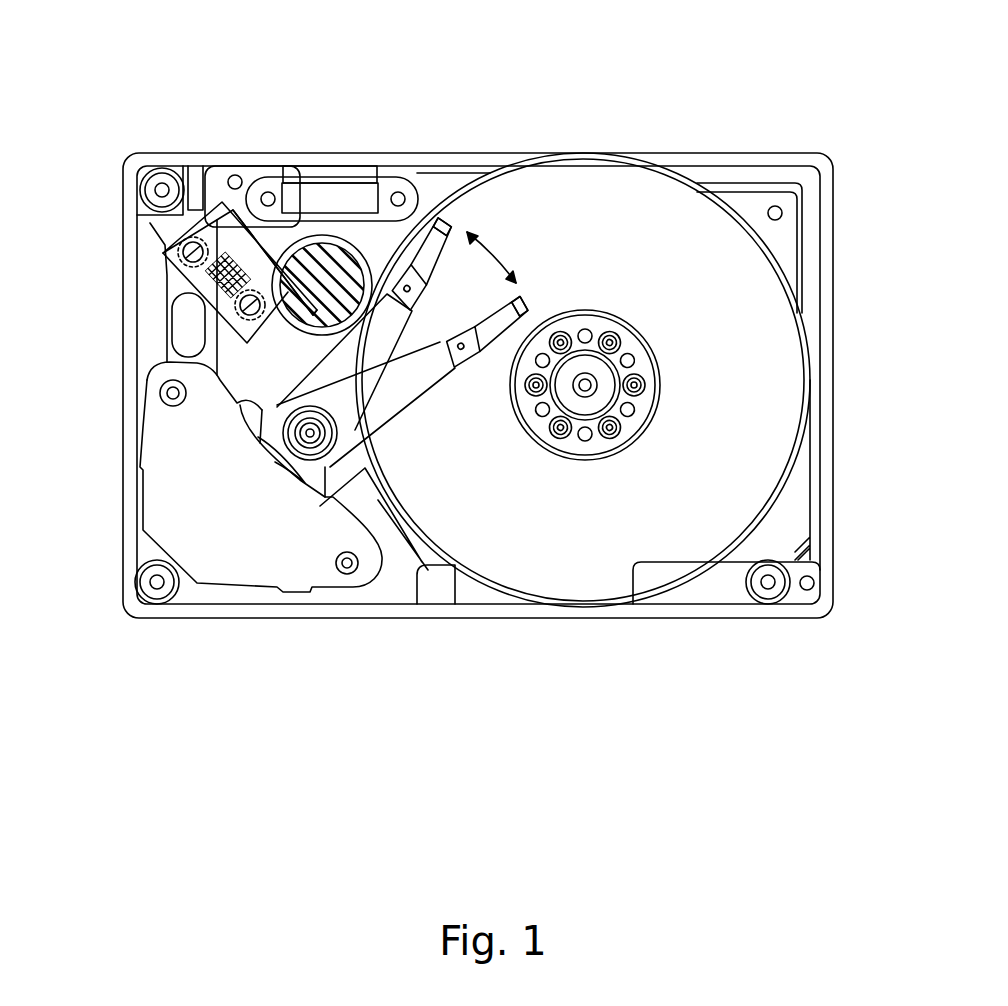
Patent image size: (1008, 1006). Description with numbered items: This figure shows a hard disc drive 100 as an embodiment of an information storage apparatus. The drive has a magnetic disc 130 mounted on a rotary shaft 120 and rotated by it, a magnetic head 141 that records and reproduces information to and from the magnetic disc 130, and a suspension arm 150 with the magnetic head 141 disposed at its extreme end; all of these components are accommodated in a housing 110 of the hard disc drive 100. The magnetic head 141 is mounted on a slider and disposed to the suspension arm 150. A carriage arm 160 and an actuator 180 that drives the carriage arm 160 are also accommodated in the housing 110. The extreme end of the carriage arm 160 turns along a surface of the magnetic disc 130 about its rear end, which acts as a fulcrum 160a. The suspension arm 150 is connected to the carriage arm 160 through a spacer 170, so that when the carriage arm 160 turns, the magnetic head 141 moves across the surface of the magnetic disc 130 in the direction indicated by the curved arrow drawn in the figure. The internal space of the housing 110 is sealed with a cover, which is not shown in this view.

The hard disc drive 100 is at (657, 89).
The housing 110 is at (437, 153).
The rotary shaft 120 is at (586, 390).
The magnetic disc 130 is at (775, 378).
The magnetic head 141 is at (532, 311).
The suspension arm 150 is at (503, 312).
The carriage arm 160 is at (403, 392).
The fulcrum 160a is at (330, 455).
The spacer 170 is at (488, 323).
The actuator 180 is at (178, 497).